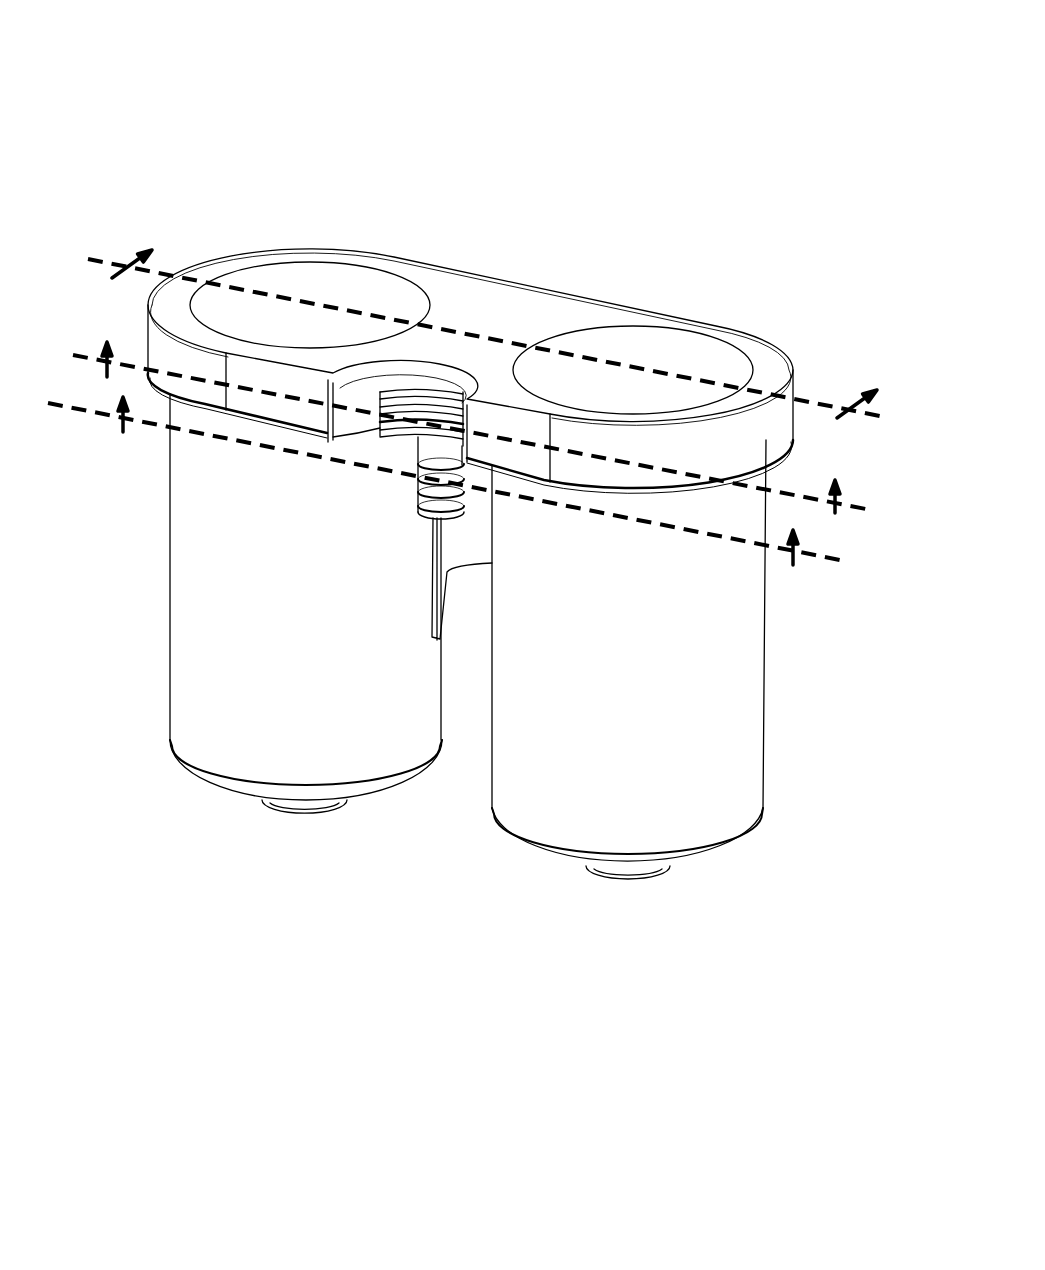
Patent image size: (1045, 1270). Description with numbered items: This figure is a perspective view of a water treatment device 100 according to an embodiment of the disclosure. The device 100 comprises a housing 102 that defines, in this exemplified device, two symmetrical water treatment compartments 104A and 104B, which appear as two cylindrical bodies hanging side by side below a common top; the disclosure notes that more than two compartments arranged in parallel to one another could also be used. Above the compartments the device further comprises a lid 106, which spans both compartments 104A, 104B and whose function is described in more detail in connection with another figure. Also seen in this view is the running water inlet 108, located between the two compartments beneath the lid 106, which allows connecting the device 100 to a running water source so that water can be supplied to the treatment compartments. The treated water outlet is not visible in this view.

The water treatment device 100 is at (684, 77).
The housing 102 is at (830, 629).
The water treatment compartment 104A is at (745, 783).
The water treatment compartment 104B is at (193, 622).
The lid 106 is at (497, 296).
The running water inlet 108 is at (420, 492).